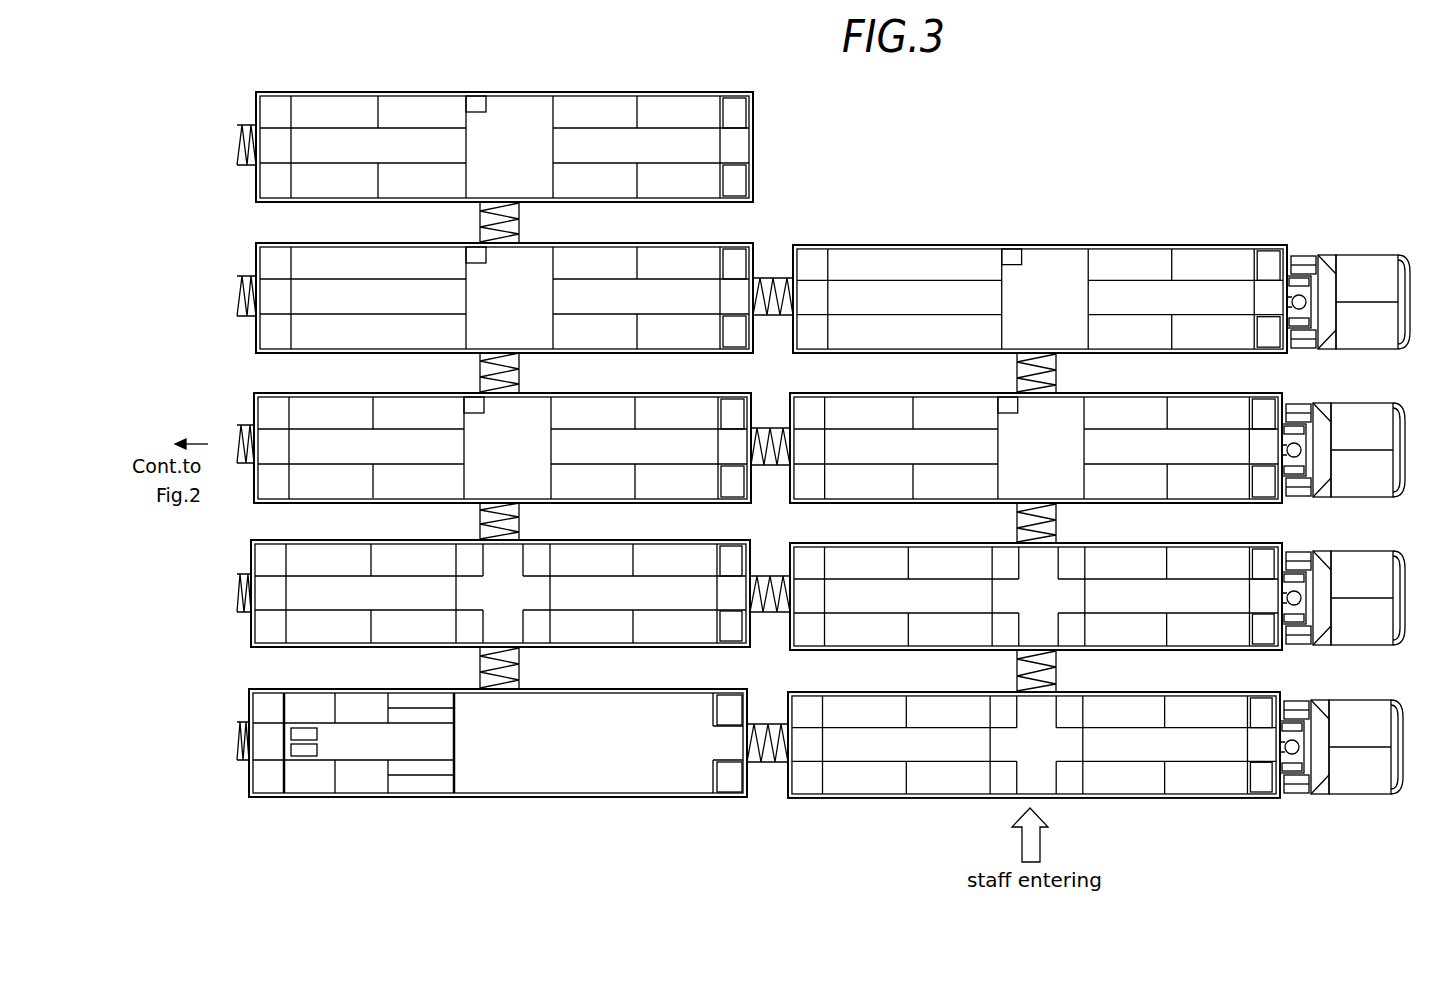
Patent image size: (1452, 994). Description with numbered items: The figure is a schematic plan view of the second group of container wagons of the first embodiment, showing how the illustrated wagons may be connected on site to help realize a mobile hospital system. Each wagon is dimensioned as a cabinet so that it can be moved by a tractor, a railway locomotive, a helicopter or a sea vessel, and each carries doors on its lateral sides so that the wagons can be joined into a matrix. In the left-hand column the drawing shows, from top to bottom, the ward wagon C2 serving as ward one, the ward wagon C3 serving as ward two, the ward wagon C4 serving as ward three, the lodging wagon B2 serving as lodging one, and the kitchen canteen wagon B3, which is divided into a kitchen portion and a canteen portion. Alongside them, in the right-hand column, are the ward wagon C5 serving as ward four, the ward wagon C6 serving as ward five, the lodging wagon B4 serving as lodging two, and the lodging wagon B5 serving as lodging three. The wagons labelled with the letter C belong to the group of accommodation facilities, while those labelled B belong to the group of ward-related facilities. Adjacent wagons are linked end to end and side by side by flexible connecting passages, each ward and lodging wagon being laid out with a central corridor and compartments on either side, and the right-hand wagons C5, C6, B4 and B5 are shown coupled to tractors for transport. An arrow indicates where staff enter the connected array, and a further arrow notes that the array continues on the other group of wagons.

The ward wagon C2 is at (305, 92).
The ward wagon C3 is at (305, 243).
The ward wagon C4 is at (305, 393).
The ward wagon C5 is at (1222, 245).
The ward wagon C6 is at (1215, 393).
The lodging wagon B2 is at (305, 540).
The kitchen canteen wagon B3 is at (307, 689).
The lodging wagon B4 is at (1200, 543).
The lodging wagon B5 is at (1197, 692).